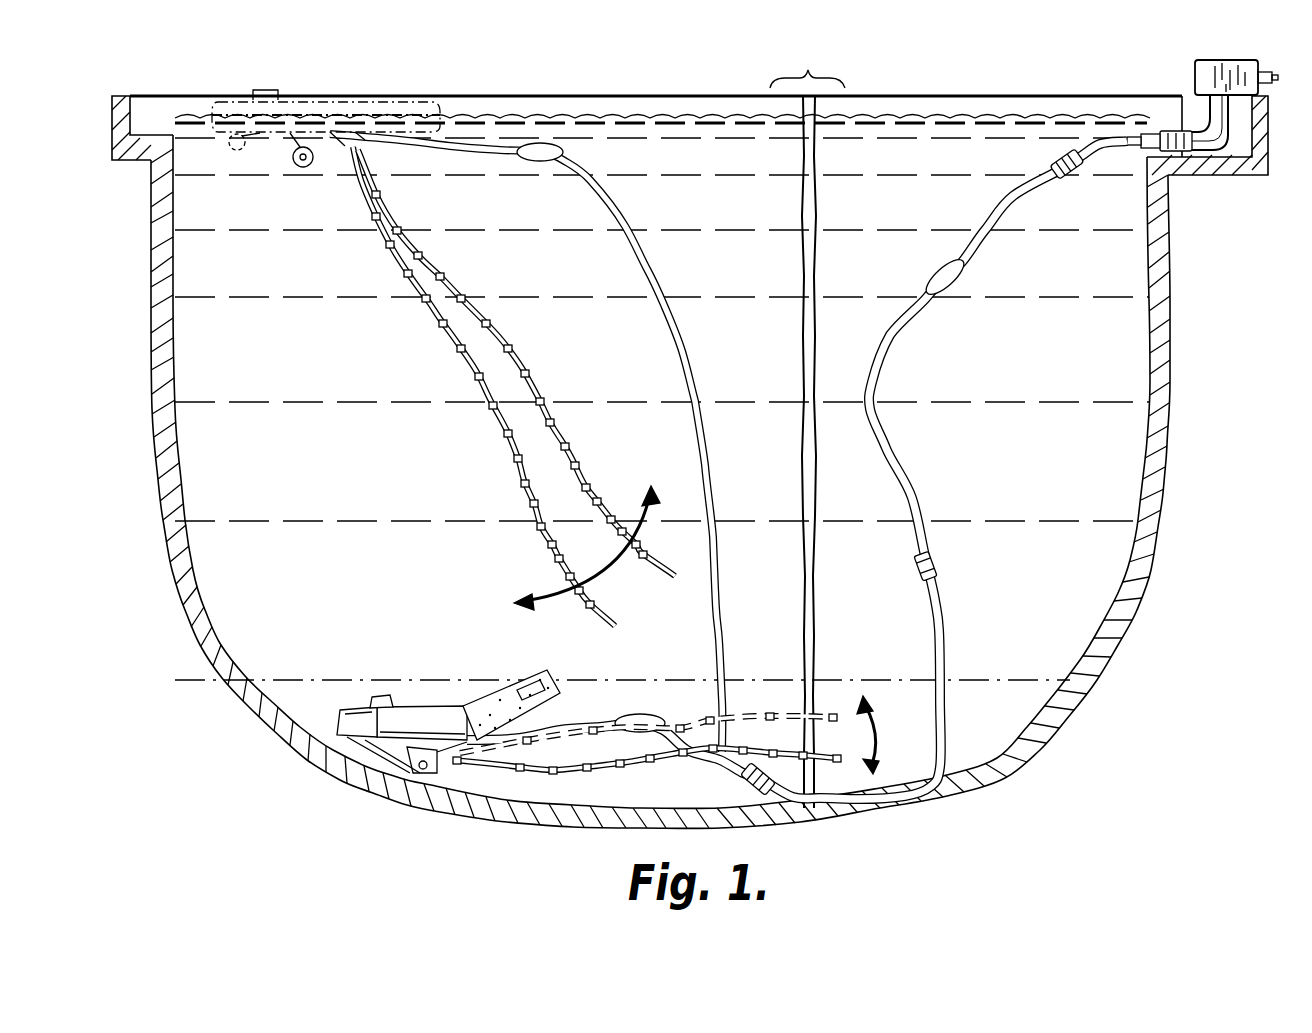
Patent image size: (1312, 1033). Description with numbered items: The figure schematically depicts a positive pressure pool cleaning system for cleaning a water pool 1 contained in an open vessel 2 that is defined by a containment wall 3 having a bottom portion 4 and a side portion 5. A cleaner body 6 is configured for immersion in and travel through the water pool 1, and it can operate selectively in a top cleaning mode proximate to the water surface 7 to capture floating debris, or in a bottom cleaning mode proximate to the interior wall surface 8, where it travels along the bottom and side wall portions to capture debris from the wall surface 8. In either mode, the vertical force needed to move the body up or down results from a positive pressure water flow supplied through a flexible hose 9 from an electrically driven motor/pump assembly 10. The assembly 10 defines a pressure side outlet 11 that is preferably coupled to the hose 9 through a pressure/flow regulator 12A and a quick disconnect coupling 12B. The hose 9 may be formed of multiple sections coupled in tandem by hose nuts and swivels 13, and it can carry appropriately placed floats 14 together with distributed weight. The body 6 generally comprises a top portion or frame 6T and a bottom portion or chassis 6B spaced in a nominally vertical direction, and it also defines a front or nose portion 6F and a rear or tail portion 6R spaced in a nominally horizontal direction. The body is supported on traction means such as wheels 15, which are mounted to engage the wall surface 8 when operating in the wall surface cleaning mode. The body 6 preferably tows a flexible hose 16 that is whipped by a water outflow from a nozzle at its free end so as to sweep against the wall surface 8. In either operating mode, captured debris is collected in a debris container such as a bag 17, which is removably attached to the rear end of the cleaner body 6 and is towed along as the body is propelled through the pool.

The water pool 1 is at (530, 108).
The open vessel 2 is at (1177, 268).
The containment wall 3 is at (1167, 335).
The bottom portion 4 is at (948, 770).
The side portion 5 is at (1148, 340).
The cleaner body 6 is at (340, 92).
The front or nose portion 6F is at (340, 708).
The top portion or frame 6T is at (434, 704).
The rear or tail portion 6R is at (552, 712).
The bottom portion or chassis 6B is at (385, 755).
The water surface 7 is at (663, 115).
The interior wall surface 8 is at (205, 592).
The flexible hose 9 is at (905, 476).
The motor/pump assembly 10 is at (1195, 64).
The pressure side outlet 11 is at (1200, 103).
The pressure/flow regulator 12A is at (1140, 130).
The quick disconnect coupling 12B is at (1125, 155).
The hose nuts and swivels 13 is at (937, 573).
The floats 14 is at (567, 153).
The wheels 15 is at (548, 770).
The flexible hose 16 is at (527, 382).
The bag 17 is at (525, 668).